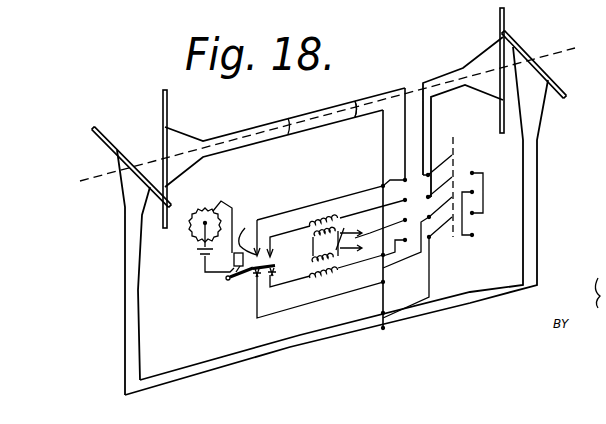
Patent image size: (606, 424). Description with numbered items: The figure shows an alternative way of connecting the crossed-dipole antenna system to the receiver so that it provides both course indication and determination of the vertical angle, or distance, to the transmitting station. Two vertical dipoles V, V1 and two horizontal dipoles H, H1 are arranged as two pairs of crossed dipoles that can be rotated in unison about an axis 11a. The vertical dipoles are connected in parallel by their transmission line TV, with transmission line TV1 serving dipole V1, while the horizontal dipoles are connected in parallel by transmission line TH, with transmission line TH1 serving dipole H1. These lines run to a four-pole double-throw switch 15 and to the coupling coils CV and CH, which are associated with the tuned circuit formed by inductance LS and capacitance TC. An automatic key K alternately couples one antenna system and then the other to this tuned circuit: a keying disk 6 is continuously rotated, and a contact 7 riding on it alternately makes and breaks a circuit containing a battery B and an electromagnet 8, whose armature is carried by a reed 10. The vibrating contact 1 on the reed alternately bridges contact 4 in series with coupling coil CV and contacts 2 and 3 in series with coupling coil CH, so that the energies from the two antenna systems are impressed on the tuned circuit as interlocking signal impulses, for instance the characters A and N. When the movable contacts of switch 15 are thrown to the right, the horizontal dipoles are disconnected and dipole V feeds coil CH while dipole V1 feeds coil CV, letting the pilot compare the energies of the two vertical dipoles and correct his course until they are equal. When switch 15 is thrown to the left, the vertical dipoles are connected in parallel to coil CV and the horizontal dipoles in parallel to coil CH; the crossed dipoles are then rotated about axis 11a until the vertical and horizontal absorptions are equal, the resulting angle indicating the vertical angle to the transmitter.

The vertical dipole V1 is at (168, 110).
The horizontal dipole H1 is at (103, 134).
The transmission line TV1 is at (290, 128).
The axis 11a is at (355, 101).
The transmission line TV is at (427, 86).
The vertical dipole V is at (506, 24).
The horizontal dipole H is at (566, 90).
The transmission line TH is at (528, 95).
The transmission line TH1 is at (127, 203).
The four-pole double-throw switch 15 is at (462, 273).
The tuned circuit inductance LS is at (310, 275).
The coupling coil CV is at (335, 220).
The coupling coil CH is at (330, 278).
The tuned circuit capacitor TC is at (353, 237).
The automatic key K is at (210, 201).
The contact 7 is at (226, 204).
The keying disk 6 is at (177, 241).
The battery B is at (196, 256).
The electromagnet 8 is at (233, 271).
The reed 10 is at (226, 281).
The contact 1 is at (276, 266).
The contact 3 is at (277, 273).
The contact 2 is at (256, 280).
The contact 4 is at (272, 253).